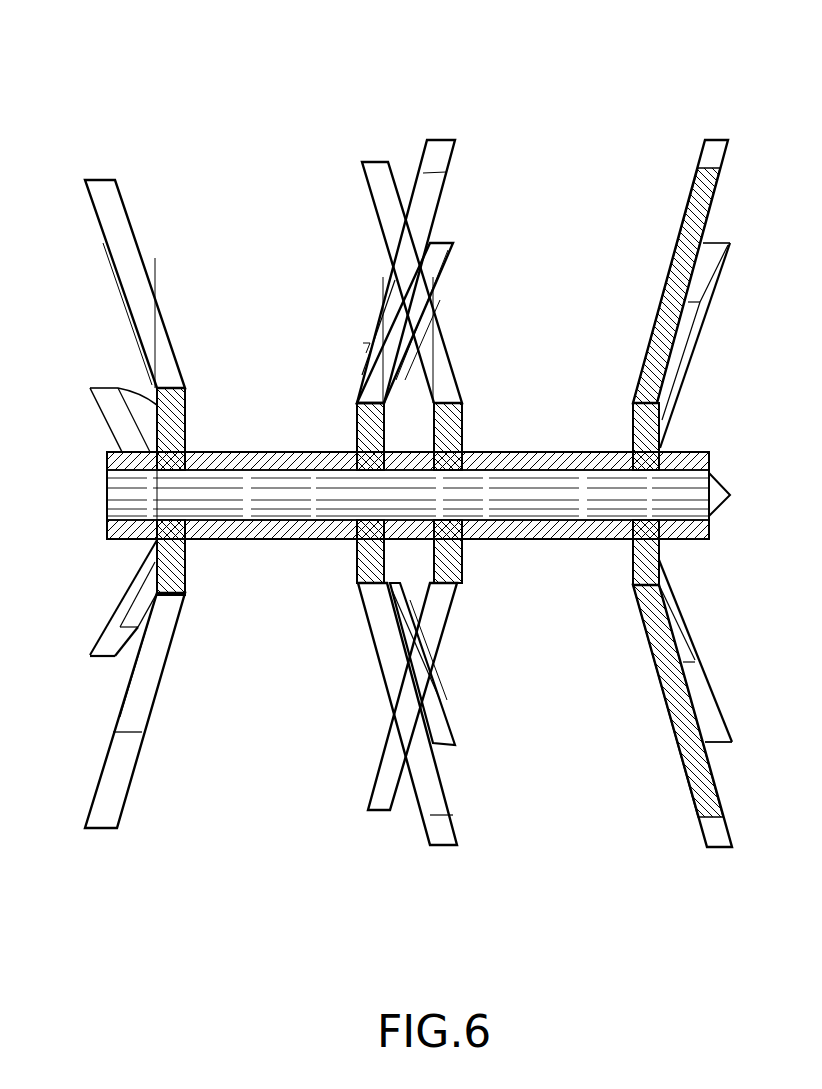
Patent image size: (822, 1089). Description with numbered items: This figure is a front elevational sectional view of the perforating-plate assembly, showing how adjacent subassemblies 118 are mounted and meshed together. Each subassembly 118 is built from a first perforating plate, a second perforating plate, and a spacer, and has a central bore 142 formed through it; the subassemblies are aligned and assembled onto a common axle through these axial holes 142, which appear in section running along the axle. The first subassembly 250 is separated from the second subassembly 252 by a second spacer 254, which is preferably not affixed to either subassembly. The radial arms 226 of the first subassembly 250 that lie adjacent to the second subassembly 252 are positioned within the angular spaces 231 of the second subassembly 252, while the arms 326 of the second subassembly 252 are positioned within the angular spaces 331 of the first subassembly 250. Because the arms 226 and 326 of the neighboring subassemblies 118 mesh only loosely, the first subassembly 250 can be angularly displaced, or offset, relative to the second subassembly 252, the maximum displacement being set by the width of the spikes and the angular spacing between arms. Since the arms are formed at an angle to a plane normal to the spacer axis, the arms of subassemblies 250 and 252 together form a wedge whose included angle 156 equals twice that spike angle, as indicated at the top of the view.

The subassembly 118 is at (233, 150).
The central bore 142 is at (240, 495).
The included angle 156 is at (455, 140).
The radial arms 226 is at (432, 145).
The angular spaces 231 is at (380, 275).
The first subassembly 250 is at (103, 190).
The second subassembly 252 is at (713, 150).
The second spacer 254 is at (107, 458).
The arms 326 is at (375, 812).
The angular spaces 331 is at (440, 238).